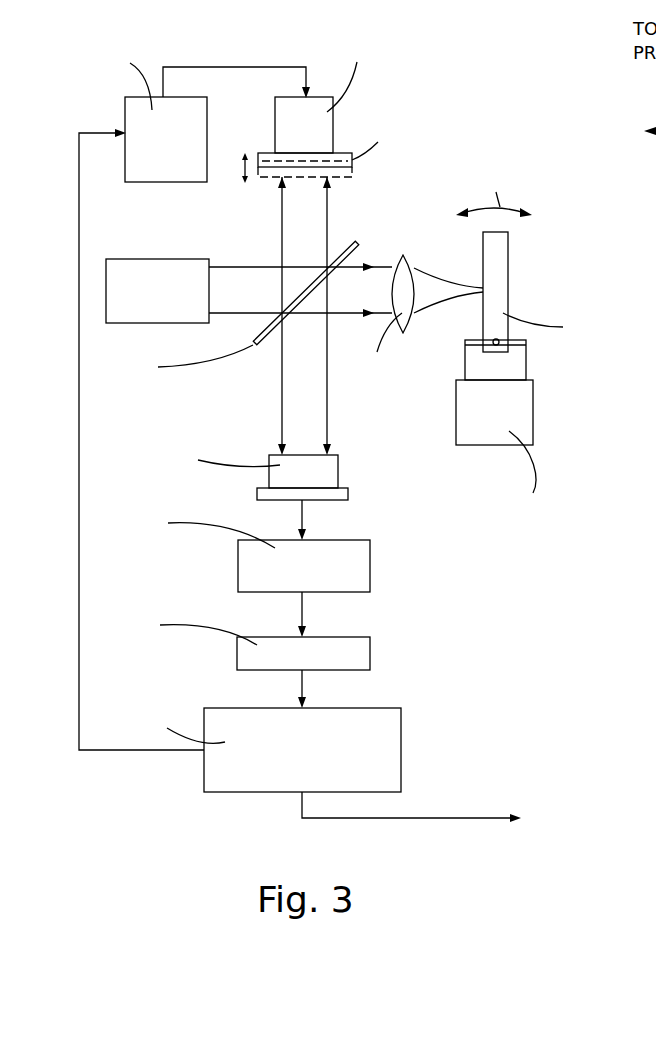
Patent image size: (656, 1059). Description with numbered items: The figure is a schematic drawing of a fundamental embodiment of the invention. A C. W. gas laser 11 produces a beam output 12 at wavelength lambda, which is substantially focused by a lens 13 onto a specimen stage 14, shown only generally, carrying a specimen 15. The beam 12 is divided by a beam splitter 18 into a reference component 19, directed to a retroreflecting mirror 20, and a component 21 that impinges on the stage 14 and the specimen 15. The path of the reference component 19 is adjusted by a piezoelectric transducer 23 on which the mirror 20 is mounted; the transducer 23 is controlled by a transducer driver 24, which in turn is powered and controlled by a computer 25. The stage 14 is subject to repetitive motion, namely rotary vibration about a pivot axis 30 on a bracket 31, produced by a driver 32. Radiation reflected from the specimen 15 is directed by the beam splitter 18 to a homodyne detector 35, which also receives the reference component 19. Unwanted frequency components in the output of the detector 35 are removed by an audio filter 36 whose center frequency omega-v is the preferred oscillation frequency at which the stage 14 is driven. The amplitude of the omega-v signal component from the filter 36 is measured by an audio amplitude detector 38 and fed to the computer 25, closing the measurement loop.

The C. W. gas laser 11 is at (189, 262).
The beam output 12 is at (259, 302).
The lens 13 is at (412, 262).
The specimen stage 14 is at (515, 247).
The specimen 15 is at (483, 290).
The beam splitter 18 is at (347, 245).
The reference component 19 is at (294, 232).
The retroreflecting mirror 20 is at (265, 152).
The component 21 is at (344, 303).
The piezoelectric transducer 23 is at (294, 134).
The transducer driver 24 is at (153, 149).
The computer 25 is at (288, 754).
The pivot axis 30 is at (494, 338).
The bracket 31 is at (466, 353).
The driver 32 is at (481, 419).
The homodyne detector 35 is at (291, 482).
The audio filter 36 is at (291, 574).
The audio amplitude detector 38 is at (291, 664).